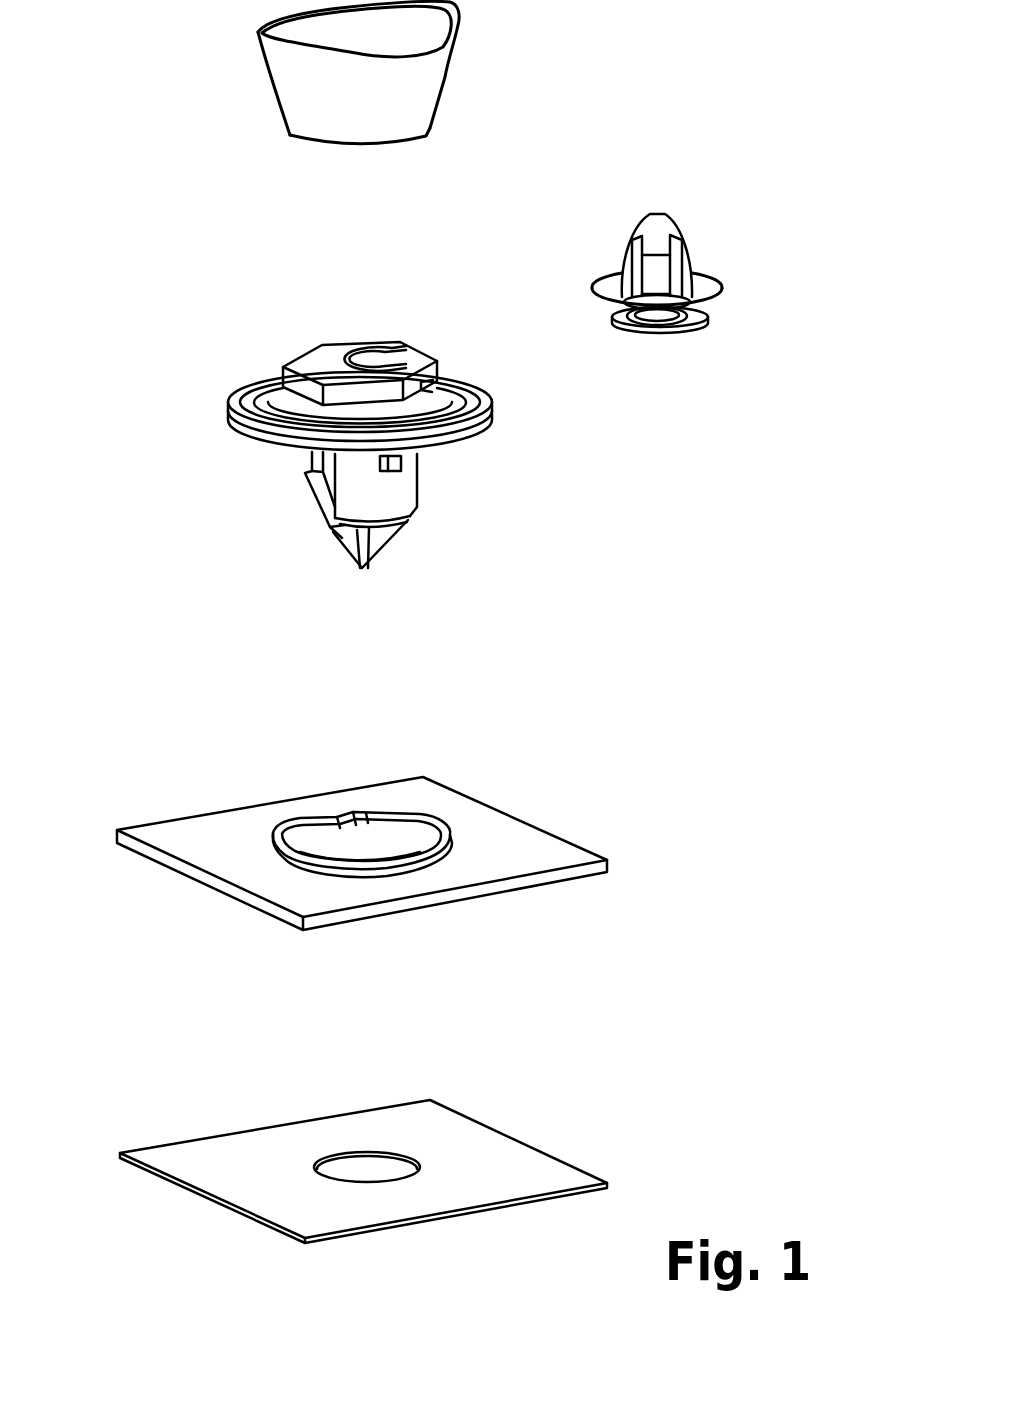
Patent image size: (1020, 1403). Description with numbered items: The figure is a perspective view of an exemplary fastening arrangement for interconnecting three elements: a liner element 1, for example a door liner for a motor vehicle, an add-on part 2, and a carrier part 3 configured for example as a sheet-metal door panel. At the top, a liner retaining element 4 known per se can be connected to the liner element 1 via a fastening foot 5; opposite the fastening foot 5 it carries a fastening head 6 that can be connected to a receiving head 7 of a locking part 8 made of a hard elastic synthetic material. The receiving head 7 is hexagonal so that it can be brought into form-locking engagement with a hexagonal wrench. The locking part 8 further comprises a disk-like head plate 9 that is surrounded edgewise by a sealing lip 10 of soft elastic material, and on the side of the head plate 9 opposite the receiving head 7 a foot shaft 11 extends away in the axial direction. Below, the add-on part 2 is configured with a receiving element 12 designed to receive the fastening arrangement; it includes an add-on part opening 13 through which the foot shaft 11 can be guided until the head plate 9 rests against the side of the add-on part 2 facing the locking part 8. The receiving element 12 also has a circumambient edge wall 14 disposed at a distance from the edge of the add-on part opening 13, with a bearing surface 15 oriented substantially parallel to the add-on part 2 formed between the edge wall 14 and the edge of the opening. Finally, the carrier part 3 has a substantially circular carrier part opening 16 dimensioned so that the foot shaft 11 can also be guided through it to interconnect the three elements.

The liner element 1 is at (410, 90).
The add-on part 2 is at (404, 805).
The carrier part 3 is at (386, 1127).
The liner retaining element 4 is at (639, 238).
The fastening foot 5 is at (665, 226).
The fastening head 6 is at (683, 330).
The receiving head 7 is at (317, 353).
The locking part 8 is at (425, 428).
The head plate 9 is at (384, 439).
The sealing lip 10 is at (240, 408).
The foot shaft 11 is at (395, 490).
The receiving element 12 is at (404, 774).
The add-on part opening 13 is at (337, 827).
The edge wall 14 is at (427, 821).
The bearing surface 15 is at (335, 843).
The carrier part opening 16 is at (361, 1162).